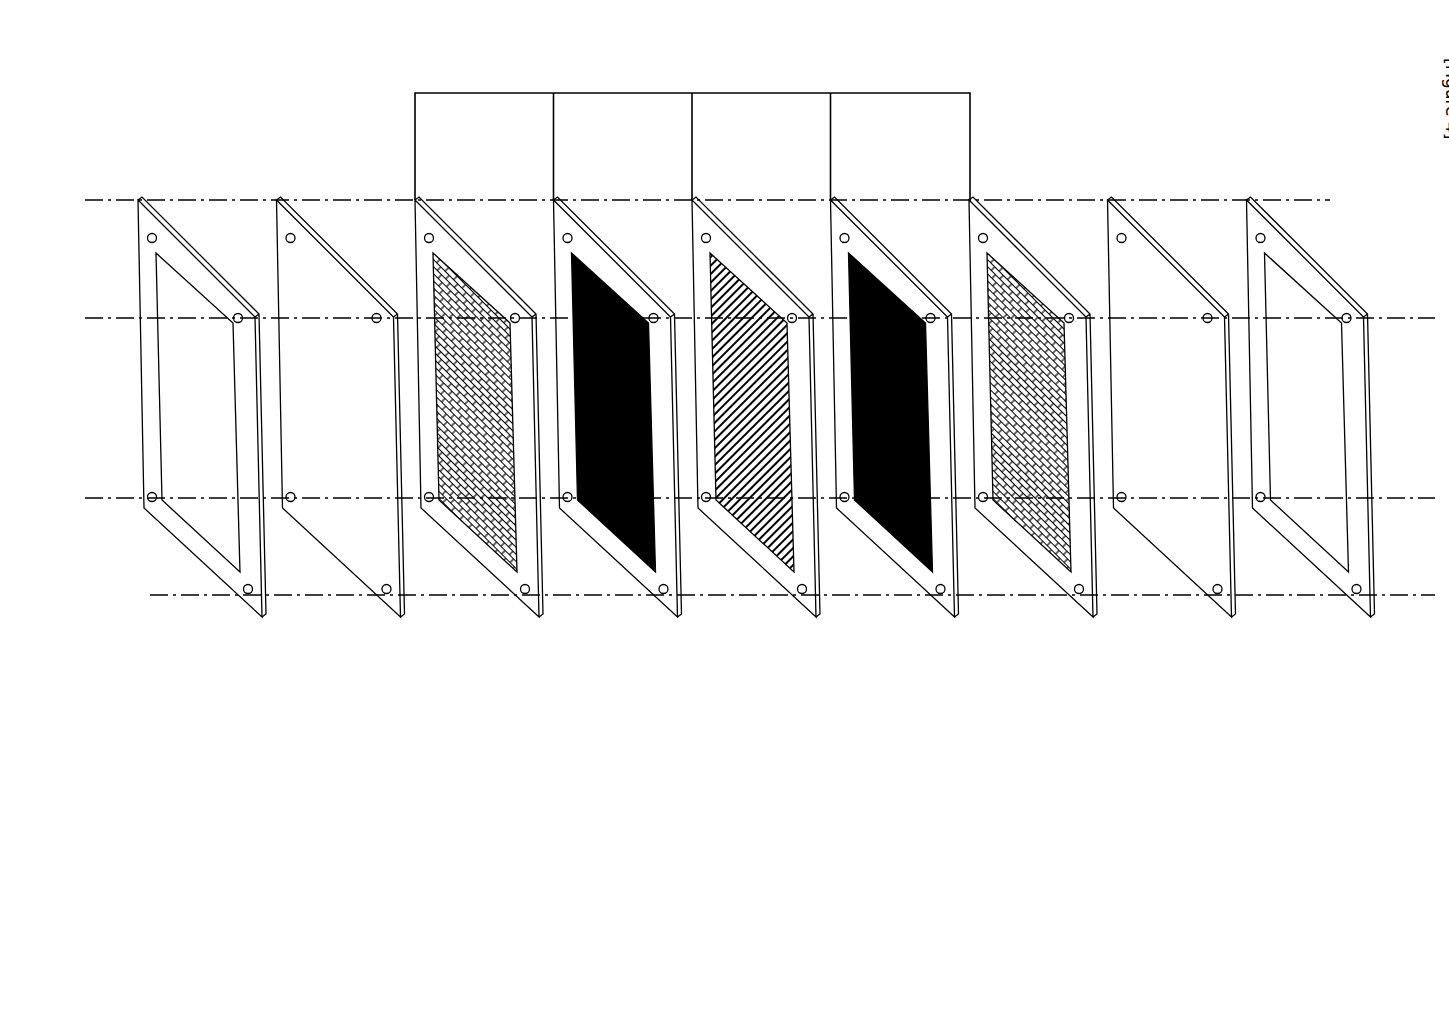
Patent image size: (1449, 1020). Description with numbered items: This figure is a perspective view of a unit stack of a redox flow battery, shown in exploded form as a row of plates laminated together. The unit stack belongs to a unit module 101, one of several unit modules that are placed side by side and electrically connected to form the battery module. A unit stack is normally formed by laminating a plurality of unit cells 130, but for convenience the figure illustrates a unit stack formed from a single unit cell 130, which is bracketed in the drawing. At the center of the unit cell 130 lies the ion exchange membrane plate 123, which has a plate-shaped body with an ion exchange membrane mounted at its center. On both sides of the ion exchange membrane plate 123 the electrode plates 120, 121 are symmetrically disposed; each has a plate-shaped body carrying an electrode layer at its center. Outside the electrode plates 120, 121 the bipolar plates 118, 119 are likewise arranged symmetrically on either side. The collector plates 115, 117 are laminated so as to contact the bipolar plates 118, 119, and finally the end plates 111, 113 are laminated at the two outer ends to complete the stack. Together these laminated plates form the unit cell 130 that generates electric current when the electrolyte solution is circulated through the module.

The unit module 101 is at (776, 820).
The end plate 111 is at (202, 466).
The end plate 113 is at (1311, 466).
The collector plate 115 is at (341, 466).
The collector plate 117 is at (1172, 466).
The bipolar plate 118 is at (479, 466).
The bipolar plate 119 is at (1033, 466).
The electrode plate 120 is at (618, 466).
The electrode plate 121 is at (895, 466).
The ion exchange membrane plate 123 is at (756, 466).
The unit cell 130 is at (692, 125).